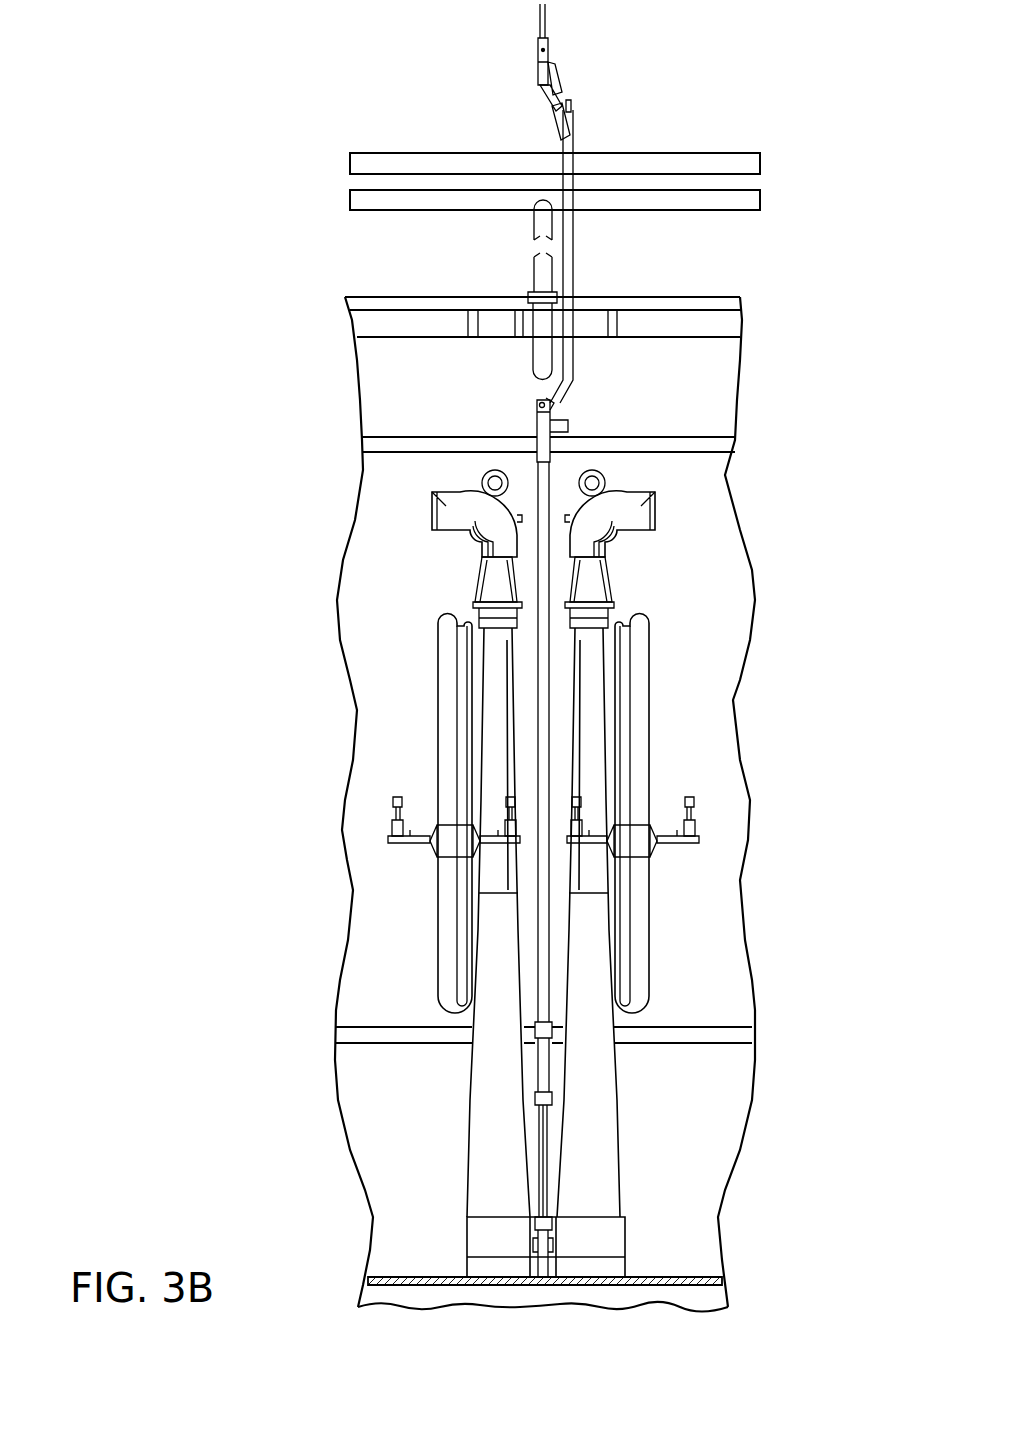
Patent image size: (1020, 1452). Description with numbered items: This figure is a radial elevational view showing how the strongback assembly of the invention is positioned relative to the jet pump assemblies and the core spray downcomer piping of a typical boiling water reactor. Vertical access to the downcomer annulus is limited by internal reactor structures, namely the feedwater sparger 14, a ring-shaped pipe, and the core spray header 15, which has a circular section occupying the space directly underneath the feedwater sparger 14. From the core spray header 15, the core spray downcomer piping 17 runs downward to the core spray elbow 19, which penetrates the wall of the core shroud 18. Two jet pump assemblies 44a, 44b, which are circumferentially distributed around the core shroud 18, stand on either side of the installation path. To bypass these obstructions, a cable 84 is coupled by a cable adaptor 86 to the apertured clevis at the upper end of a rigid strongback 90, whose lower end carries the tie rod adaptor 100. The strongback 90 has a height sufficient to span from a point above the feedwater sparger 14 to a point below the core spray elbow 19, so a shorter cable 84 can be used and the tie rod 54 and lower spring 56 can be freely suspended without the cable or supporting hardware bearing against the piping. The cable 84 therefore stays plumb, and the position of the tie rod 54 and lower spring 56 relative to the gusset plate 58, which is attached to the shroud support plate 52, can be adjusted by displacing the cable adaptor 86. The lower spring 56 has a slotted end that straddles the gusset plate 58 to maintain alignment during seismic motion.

The feedwater sparger 14 is at (460, 158).
The core spray header 15 is at (424, 205).
The core spray downcomer piping 17 is at (537, 233).
The core shroud 18 is at (719, 603).
The core spray elbow 19 is at (534, 377).
The jet pump assembly 44a is at (437, 739).
The jet pump assembly 44b is at (650, 739).
The shroud support plate 52 is at (680, 1281).
The tie rod 54 is at (544, 650).
The lower spring 56 is at (541, 1162).
The gusset plate 58 is at (553, 1246).
The cable 84 is at (546, 15).
The cable adaptor 86 is at (549, 40).
The strongback 90 is at (575, 257).
The tie rod adaptor 100 is at (540, 432).